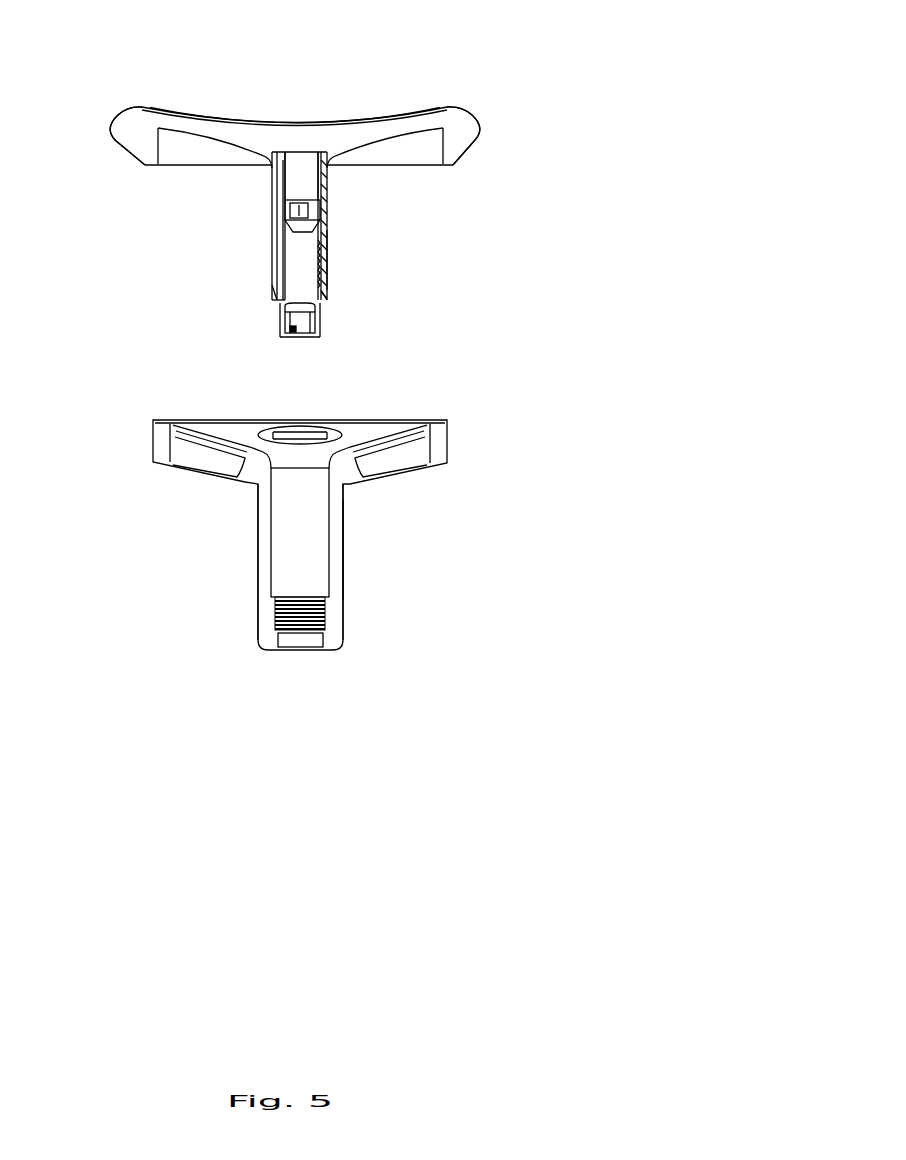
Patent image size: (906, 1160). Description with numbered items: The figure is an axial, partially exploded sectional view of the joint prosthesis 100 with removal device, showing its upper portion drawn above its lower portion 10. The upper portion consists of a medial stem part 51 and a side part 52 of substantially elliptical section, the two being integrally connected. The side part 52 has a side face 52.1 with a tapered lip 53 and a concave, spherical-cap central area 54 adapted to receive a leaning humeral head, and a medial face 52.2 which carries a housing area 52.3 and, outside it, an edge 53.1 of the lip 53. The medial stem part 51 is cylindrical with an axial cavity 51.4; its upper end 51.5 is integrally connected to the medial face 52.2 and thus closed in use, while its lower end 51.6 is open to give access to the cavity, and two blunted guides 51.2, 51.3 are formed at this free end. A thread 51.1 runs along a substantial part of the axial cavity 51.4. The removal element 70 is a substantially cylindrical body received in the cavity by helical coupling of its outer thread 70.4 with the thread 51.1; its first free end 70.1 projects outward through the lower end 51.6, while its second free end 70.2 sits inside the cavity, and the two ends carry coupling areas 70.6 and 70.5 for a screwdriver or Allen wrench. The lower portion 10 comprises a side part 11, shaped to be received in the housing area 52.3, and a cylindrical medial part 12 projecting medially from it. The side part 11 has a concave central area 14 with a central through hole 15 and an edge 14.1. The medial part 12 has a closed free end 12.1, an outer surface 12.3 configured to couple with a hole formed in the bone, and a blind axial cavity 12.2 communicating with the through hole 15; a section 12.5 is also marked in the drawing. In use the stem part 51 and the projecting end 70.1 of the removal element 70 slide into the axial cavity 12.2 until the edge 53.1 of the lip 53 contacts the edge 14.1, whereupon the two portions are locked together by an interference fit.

The joint prosthesis with removal device 100 is at (269, 533).
The lower portion 10 is at (290, 533).
The side part 11 is at (434, 405).
The medial part 12 is at (236, 563).
The closed free end 12.1 is at (296, 659).
The axial cavity 12.2 is at (324, 512).
The outer surface 12.3 is at (347, 541).
The threaded bore section 12.5 is at (282, 596).
The central area 14 is at (216, 422).
The edge 14.1 is at (156, 420).
The central through hole 15 is at (286, 431).
The medial stem part 51 is at (269, 271).
The thread 51.1 is at (323, 259).
The blunted guide 51.2 is at (268, 304).
The blunted guide 51.3 is at (331, 302).
The axial cavity 51.4 is at (289, 176).
The upper end 51.5 is at (315, 164).
The lower end 51.6 is at (269, 300).
The side part 52 is at (419, 97).
The side face 52.1 is at (171, 106).
The medial face 52.2 is at (166, 180).
The housing area 52.3 is at (419, 158).
The tapered lip 53 is at (118, 126).
The edge of lip 53.1 is at (144, 167).
The central area 54 is at (294, 132).
The removal element 70 is at (302, 291).
The first free end 70.1 is at (324, 324).
The second free end 70.2 is at (321, 213).
The thread 70.4 is at (324, 276).
The coupling area 70.5 is at (293, 335).
The coupling area 70.6 is at (300, 212).